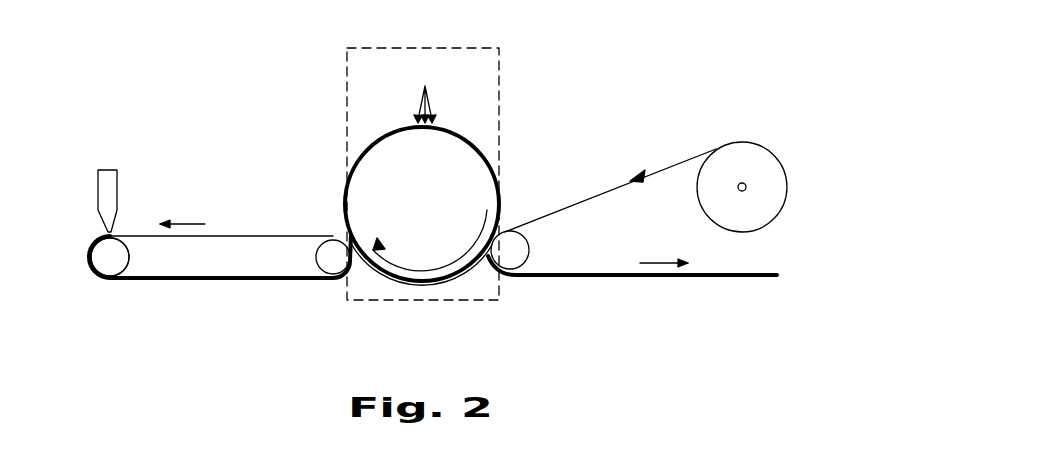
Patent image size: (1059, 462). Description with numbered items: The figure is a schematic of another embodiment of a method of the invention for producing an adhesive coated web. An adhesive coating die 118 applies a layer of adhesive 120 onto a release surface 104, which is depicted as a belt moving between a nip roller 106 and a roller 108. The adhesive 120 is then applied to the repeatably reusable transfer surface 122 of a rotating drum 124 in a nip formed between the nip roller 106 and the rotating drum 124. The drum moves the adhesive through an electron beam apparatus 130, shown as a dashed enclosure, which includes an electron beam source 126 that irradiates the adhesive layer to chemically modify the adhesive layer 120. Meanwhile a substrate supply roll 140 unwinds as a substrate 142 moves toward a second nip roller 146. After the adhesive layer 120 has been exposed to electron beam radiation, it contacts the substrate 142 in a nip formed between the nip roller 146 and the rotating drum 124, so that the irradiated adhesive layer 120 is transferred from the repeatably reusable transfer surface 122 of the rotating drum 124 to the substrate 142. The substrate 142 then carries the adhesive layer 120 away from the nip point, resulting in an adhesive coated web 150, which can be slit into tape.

The release surface 104 is at (227, 233).
The nip roller 106 is at (322, 255).
The roller 108 is at (110, 262).
The adhesive coating die 118 is at (108, 190).
The adhesive layer 120 is at (90, 267).
The repeatably reusable transfer surface 122 is at (463, 268).
The rotating drum 124 is at (445, 180).
The electron beam source 126 is at (430, 100).
The electron beam apparatus 130 is at (503, 82).
The substrate supply roll 140 is at (745, 165).
The substrate 142 is at (665, 167).
The nip roller 146 is at (523, 247).
The adhesive coated web 150 is at (737, 282).